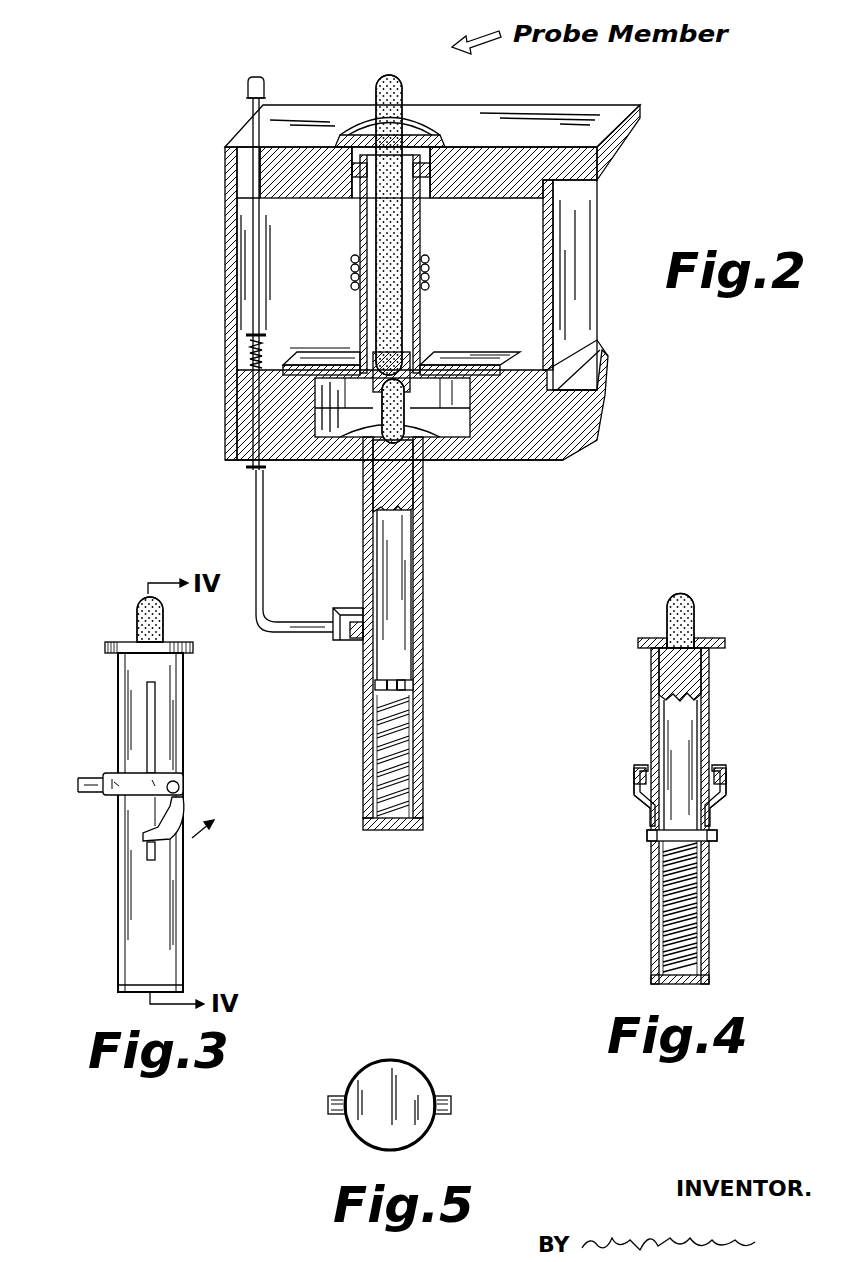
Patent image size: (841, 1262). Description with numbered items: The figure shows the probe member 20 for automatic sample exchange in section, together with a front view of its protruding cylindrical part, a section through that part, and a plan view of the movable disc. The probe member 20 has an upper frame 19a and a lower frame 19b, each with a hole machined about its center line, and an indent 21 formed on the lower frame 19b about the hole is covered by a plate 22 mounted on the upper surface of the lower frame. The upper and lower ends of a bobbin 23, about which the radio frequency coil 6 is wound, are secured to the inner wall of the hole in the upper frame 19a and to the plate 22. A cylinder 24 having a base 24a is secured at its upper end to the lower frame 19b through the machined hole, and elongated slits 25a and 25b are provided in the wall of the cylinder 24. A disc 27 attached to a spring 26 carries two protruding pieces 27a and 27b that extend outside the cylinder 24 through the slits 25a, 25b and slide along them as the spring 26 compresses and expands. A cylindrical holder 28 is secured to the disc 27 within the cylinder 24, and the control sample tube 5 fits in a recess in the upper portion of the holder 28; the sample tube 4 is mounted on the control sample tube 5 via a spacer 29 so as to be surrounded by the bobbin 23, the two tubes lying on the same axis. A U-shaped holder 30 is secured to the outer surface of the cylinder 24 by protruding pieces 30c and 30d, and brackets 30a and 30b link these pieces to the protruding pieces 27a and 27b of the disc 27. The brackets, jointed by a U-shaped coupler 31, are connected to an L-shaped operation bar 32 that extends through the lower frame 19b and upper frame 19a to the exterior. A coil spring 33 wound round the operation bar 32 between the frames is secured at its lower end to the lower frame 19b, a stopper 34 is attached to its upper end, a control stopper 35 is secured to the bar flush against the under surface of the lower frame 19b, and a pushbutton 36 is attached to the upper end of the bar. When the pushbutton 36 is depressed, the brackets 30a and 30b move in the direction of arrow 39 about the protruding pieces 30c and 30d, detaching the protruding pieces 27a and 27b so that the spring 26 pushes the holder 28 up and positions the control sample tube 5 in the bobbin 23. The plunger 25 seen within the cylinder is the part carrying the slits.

In FIG. 2, the sample tube 4 is at (378, 97).
In FIG. 2, the control sample tube 5 is at (406, 404).
In FIG. 3, the control sample tube 5 is at (137, 616).
In FIG. 4, the control sample tube 5 is at (696, 606).
In FIG. 2, the radio frequency coil 6 is at (428, 268).
In FIG. 2, the upper frame 19a is at (588, 115).
In FIG. 2, the lower frame 19b is at (578, 455).
In FIG. 2, the probe member 20 is at (459, 49).
In FIG. 2, the indent 21 is at (465, 450).
In FIG. 2, the plate 22 is at (492, 360).
In FIG. 2, the bobbin 23 is at (421, 230).
In FIG. 2, the cylinder 24 is at (415, 656).
In FIG. 3, the cylinder 24 is at (118, 824).
In FIG. 4, the cylinder 24 is at (713, 814).
In FIG. 2, the base 24a is at (400, 832).
In FIG. 3, the base 24a is at (120, 990).
In FIG. 4, the base 24a is at (700, 975).
In FIG. 2, the plunger 25 is at (394, 596).
In FIG. 3, the elongated slit 25a is at (147, 692).
In FIG. 4, the elongated slit 25a is at (705, 722).
In FIG. 4, the elongated slit 25b is at (655, 722).
In FIG. 2, the spring 26 is at (411, 758).
In FIG. 4, the spring 26 is at (703, 885).
In FIG. 2, the disc 27 is at (420, 686).
In FIG. 4, the disc 27 is at (700, 852).
In FIG. 5, the disc 27 is at (418, 1080).
In FIG. 2, the protruding piece 27a is at (408, 694).
In FIG. 3, the protruding piece 27a is at (147, 851).
In FIG. 4, the protruding piece 27a is at (708, 845).
In FIG. 5, the protruding piece 27a is at (450, 1108).
In FIG. 4, the protruding piece 27b is at (650, 843).
In FIG. 5, the protruding piece 27b is at (330, 1100).
In FIG. 2, the cylindrical holder 28 is at (412, 500).
In FIG. 4, the cylindrical holder 28 is at (660, 668).
In FIG. 2, the spacer 29 is at (428, 362).
In FIG. 2, the U-shaped holder 30 is at (356, 640).
In FIG. 4, the U-shaped holder 30 is at (712, 768).
In FIG. 3, the bracket 30a is at (183, 812).
In FIG. 4, the bracket 30a is at (718, 805).
In FIG. 4, the bracket 30b is at (640, 802).
In FIG. 3, the protruding piece 30c is at (181, 786).
In FIG. 4, the protruding piece 30c is at (728, 790).
In FIG. 4, the protruding piece 30d is at (633, 782).
In FIG. 2, the U-shaped coupler 31 is at (349, 610).
In FIG. 3, the U-shaped coupler 31 is at (110, 797).
In FIG. 4, the U-shaped coupler 31 is at (634, 772).
In FIG. 2, the L-shaped operation bar 32 is at (276, 636).
In FIG. 3, the L-shaped operation bar 32 is at (78, 782).
In FIG. 2, the coil spring 33 is at (248, 352).
In FIG. 2, the stopper 34 is at (246, 333).
In FIG. 2, the control stopper 35 is at (249, 470).
In FIG. 2, the pushbutton 36 is at (246, 88).
In FIG. 3, the arrow 39 is at (217, 836).